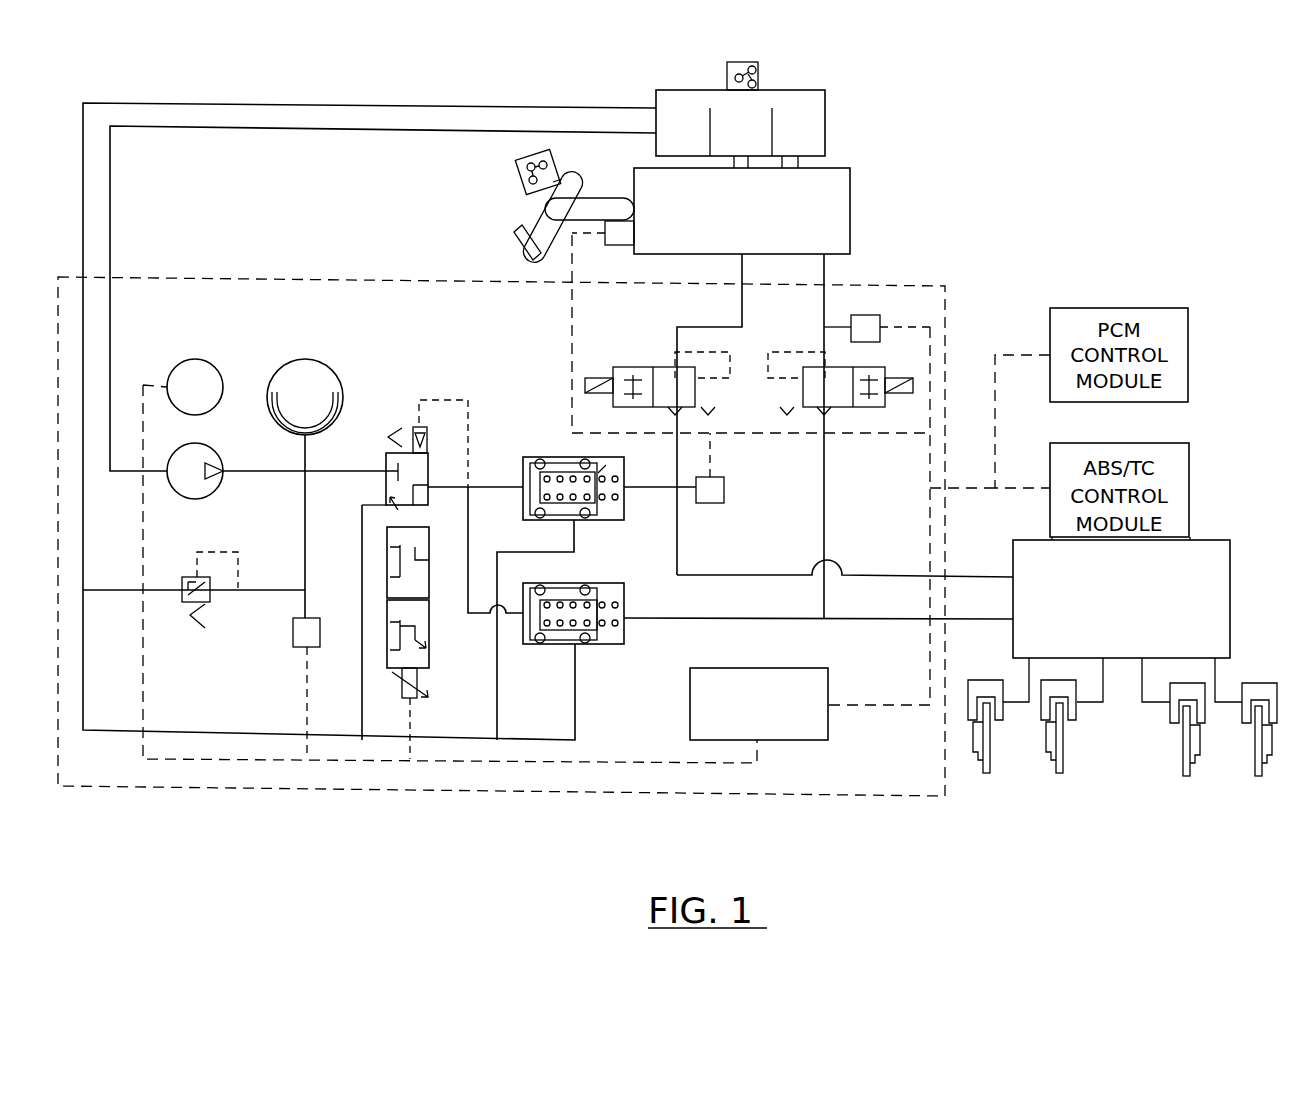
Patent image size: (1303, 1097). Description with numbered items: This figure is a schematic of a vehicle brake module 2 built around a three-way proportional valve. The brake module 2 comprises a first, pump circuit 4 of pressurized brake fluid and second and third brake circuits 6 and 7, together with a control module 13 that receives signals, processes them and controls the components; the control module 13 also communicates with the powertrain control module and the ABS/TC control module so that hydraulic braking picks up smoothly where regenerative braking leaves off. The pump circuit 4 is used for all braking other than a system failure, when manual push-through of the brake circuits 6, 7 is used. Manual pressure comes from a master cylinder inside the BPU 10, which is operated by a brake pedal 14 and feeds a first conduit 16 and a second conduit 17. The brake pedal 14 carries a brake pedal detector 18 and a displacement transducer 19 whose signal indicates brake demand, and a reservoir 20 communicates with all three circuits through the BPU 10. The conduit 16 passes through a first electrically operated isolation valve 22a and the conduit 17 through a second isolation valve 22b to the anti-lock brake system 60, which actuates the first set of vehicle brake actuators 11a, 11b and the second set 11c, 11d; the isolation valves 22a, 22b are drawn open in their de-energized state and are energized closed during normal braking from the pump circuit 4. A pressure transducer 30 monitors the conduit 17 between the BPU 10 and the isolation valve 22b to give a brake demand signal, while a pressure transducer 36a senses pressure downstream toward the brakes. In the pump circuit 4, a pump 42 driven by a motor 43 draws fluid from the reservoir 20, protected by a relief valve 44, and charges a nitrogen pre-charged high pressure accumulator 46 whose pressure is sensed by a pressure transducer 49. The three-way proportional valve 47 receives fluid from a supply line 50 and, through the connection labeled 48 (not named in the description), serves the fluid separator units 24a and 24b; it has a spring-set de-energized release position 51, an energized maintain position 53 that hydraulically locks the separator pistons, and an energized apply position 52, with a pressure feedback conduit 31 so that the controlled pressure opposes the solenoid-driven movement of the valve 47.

The brake module 2 is at (455, 800).
The first circuit 4 is at (342, 757).
The second circuit 6 is at (690, 513).
The third circuit 7 is at (832, 630).
The BPU 10 is at (850, 220).
The vehicle brake actuator 11a is at (986, 775).
The vehicle brake actuator 11b is at (1059, 775).
The vehicle brake actuator 11c is at (1186, 778).
The vehicle brake actuator 11d is at (1258, 778).
The control module 13 is at (790, 741).
The brake pedal 14 is at (540, 224).
The first conduit 16 is at (742, 283).
The conduit 17 is at (824, 281).
The brake pedal detector 18 is at (520, 168).
The displacement transducer 19 is at (616, 246).
The reservoir 20 is at (826, 133).
The first electrically operated isolation valve 22a is at (613, 367).
The second electrically operated isolation valve 22b is at (885, 367).
The fluid separator unit 24a is at (600, 522).
The fluid separator unit 24b is at (605, 646).
The pressure transducer 30 is at (880, 323).
The pressure feedback conduit 31 is at (450, 395).
The pressure transducer 36a is at (724, 491).
The pump 42 is at (178, 494).
The motor 43 is at (172, 370).
The relief valve 44 is at (208, 604).
The high pressure accumulator 46 is at (288, 352).
The three-way proportional valve 47 is at (385, 458).
The supply line 48 is at (507, 486).
The pressure transducer 49 is at (313, 648).
The supply line 50 is at (340, 476).
The de-energized position 51 is at (428, 465).
The second energized position 52 is at (430, 612).
The first energized position 53 is at (429, 543).
The anti-lock brake system 60 is at (1231, 630).